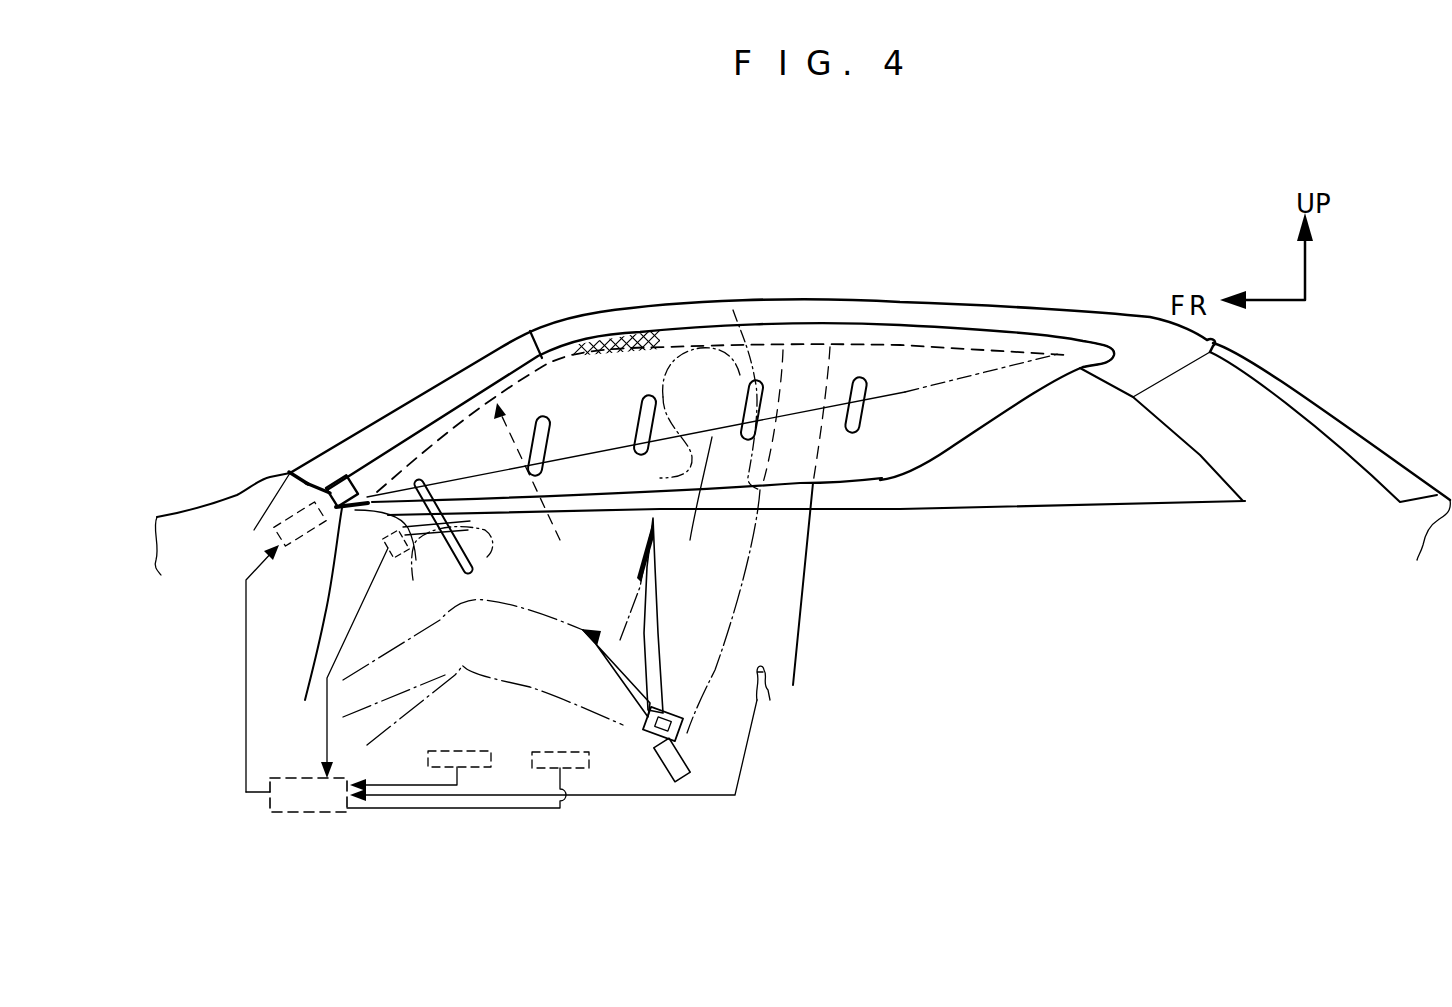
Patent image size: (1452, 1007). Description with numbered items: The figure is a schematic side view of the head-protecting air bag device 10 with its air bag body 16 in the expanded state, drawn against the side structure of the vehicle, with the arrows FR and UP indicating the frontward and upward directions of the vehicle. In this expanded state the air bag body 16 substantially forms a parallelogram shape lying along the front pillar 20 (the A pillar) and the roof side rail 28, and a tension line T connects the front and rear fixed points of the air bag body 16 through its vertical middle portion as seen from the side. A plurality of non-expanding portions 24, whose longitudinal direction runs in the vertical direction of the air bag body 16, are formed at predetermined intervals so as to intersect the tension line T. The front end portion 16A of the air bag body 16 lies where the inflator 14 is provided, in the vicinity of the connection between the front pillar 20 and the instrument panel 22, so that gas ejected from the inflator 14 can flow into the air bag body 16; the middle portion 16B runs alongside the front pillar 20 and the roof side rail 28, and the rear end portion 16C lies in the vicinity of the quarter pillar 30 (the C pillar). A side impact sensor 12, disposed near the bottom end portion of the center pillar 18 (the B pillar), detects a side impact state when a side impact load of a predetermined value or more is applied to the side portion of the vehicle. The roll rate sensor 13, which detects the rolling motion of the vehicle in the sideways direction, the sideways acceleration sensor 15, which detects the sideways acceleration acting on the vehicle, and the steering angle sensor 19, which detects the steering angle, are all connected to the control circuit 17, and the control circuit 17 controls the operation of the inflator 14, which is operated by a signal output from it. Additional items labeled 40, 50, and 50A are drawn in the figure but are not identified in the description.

The head-protecting air bag device 10 is at (919, 302).
The side impact sensor 12 is at (772, 712).
The roll rate sensor 13 is at (480, 751).
The inflator 14 is at (316, 532).
The sideways acceleration sensor 15 is at (588, 758).
The air bag body 16 is at (709, 320).
The front end portion 16A is at (387, 457).
The middle portion 16B is at (684, 511).
The rear end portion 16C is at (1077, 343).
The control circuit 17 is at (300, 812).
The center pillar 18 is at (817, 493).
The steering angle sensor 19 is at (388, 545).
The front pillar 20 is at (545, 483).
The instrument panel 22 is at (463, 525).
The non-expanding portions 24 is at (636, 427).
The roof side rail 28 is at (848, 310).
The quarter pillar 30 is at (1150, 420).
The front pillar 40 is at (457, 393).
The seat 50 is at (660, 478).
The headrest 50A is at (733, 310).
The tension line T is at (960, 380).